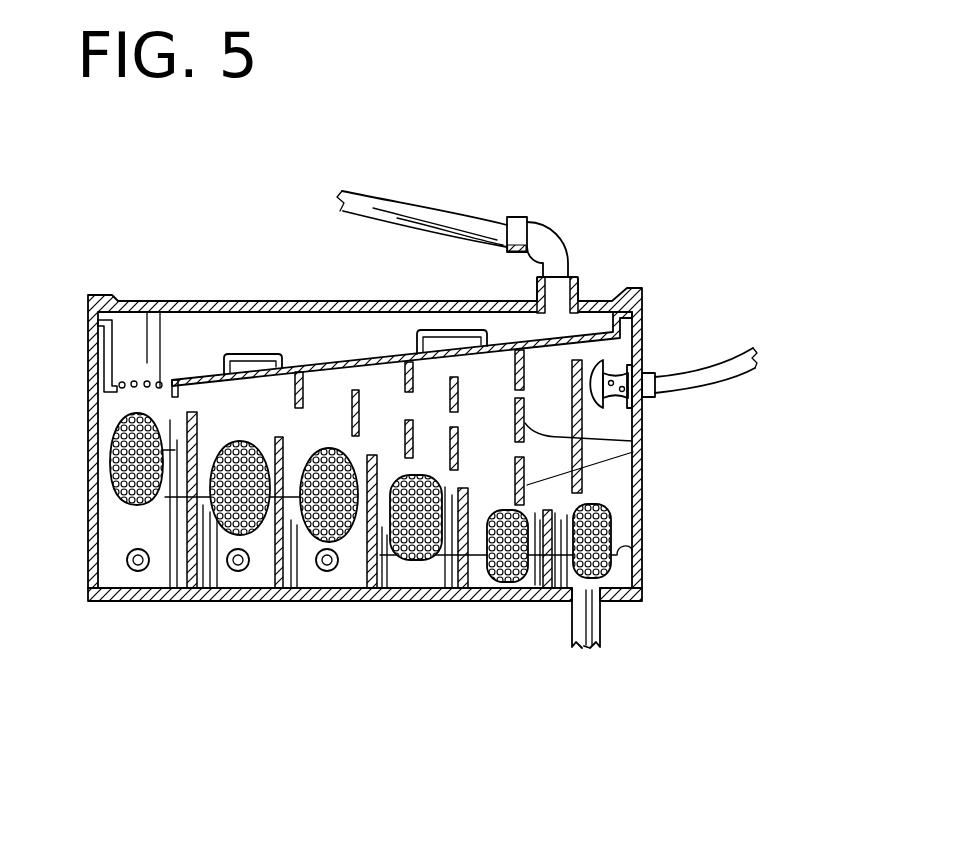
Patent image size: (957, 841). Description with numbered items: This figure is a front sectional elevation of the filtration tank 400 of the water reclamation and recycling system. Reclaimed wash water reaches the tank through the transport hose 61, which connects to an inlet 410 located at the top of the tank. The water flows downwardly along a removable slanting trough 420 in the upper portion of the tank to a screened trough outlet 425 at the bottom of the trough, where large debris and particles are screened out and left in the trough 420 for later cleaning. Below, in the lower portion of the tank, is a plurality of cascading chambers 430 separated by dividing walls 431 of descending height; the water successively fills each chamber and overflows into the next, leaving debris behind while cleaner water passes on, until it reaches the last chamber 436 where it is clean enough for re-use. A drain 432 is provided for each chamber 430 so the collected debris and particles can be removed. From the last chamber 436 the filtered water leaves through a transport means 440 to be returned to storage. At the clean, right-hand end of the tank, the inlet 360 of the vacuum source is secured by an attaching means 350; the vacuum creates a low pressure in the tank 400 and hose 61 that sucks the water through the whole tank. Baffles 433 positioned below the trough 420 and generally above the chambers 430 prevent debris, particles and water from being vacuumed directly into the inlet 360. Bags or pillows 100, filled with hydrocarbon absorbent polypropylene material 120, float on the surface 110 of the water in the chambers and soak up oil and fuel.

The filtration tank 400 is at (620, 191).
The inlet 410 is at (565, 241).
The transport hose 61 is at (453, 218).
The inlet of vacuum source 360 is at (644, 366).
The attaching means 350 is at (703, 381).
The slanting trough 420 is at (203, 378).
The screened trough outlet 425 is at (133, 380).
The dividing walls 431 is at (185, 423).
The baffles 433 is at (525, 376).
The drain 432 is at (127, 572).
The cascading chambers 430 is at (310, 592).
The transport means 440 is at (600, 613).
The surface of the water 110 is at (108, 449).
The polypropylene material 120 is at (117, 500).
The bags or pillows 100 is at (381, 535).
The last chamber 436 is at (613, 522).